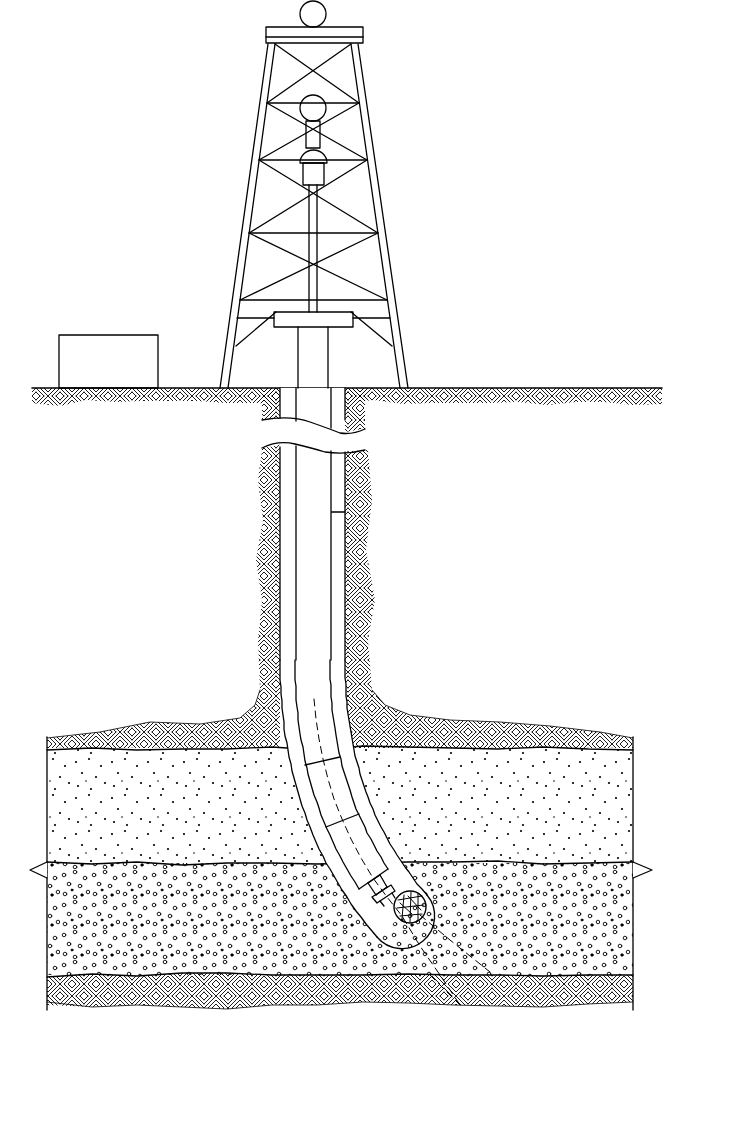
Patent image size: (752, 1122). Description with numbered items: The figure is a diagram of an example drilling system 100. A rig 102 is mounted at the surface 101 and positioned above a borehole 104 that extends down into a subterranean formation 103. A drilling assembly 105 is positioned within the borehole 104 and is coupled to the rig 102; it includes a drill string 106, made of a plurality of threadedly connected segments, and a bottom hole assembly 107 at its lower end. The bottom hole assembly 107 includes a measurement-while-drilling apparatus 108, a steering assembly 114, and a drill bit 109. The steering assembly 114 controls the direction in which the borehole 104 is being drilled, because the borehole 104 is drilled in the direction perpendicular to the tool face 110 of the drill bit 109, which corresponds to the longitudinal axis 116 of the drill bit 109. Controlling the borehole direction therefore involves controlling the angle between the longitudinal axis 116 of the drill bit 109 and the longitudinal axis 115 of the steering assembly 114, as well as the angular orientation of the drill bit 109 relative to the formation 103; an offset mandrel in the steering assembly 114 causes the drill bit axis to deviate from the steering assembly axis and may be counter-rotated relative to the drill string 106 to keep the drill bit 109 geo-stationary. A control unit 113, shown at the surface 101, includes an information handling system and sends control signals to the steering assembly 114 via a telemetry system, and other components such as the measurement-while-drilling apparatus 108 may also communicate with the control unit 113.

The drilling system 100 is at (582, 74).
The surface 101 is at (636, 387).
The rig 102 is at (363, 30).
The subterranean formation 103 is at (630, 512).
The borehole 104 is at (278, 488).
The drilling assembly 105 is at (268, 583).
The drill string 106 is at (333, 515).
The bottom hole assembly 107 is at (380, 808).
The measurement-while-drilling apparatus 108 is at (318, 797).
The drill bit 109 is at (393, 909).
The tool face 110 is at (430, 920).
The control unit 113 is at (130, 373).
The steering assembly 114 is at (355, 873).
The longitudinal axis of the steering assembly 115 is at (435, 963).
The longitudinal axis of the drill bit 116 is at (477, 953).